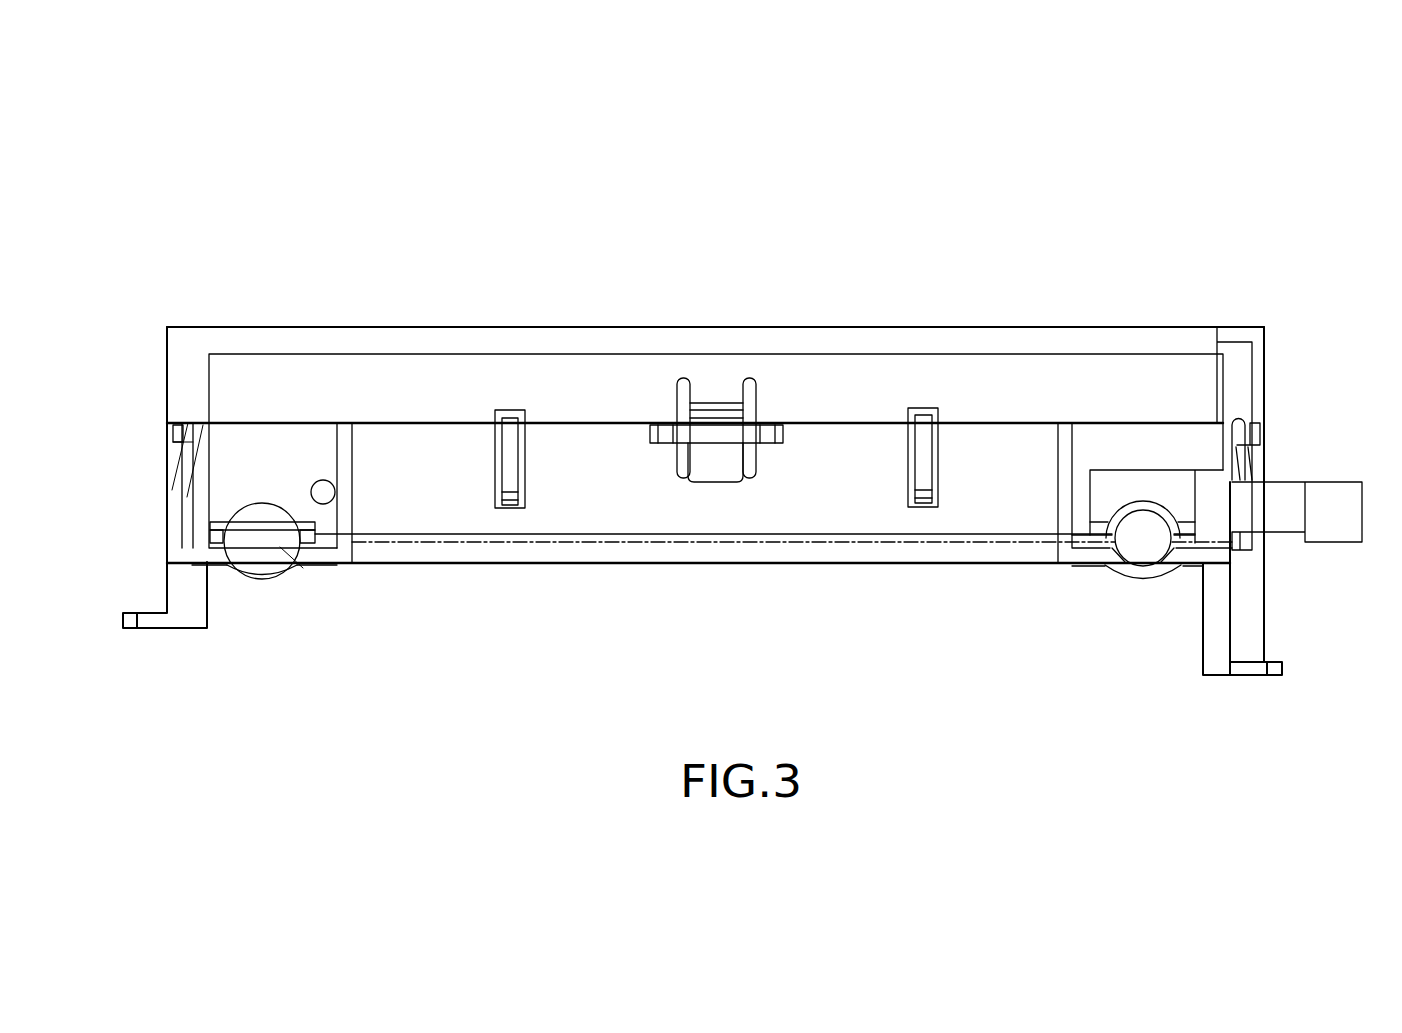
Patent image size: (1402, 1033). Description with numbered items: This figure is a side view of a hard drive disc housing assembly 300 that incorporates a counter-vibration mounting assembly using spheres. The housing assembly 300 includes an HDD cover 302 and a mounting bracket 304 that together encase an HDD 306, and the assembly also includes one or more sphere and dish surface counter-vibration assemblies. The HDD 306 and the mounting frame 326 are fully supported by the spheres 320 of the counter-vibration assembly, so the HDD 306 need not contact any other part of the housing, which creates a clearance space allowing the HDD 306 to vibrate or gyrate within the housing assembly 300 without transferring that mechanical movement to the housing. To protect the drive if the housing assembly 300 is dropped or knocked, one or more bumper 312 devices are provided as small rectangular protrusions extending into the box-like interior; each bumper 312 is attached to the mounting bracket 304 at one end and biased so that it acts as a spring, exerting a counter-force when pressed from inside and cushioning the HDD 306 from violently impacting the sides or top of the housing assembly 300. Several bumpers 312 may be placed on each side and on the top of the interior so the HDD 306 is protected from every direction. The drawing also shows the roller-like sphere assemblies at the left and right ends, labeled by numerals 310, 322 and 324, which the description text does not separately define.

The housing assembly 300 is at (738, 158).
The HDD cover 302 is at (668, 327).
The mounting bracket 304 is at (1008, 563).
The HDD 306 is at (892, 373).
The drive roller 310 is at (1153, 570).
The bumper 312 is at (192, 430).
The spheres 320 is at (273, 542).
The roller mount 322 is at (247, 515).
The roller bottom portion 324 is at (287, 562).
The mounting frame 326 is at (643, 535).